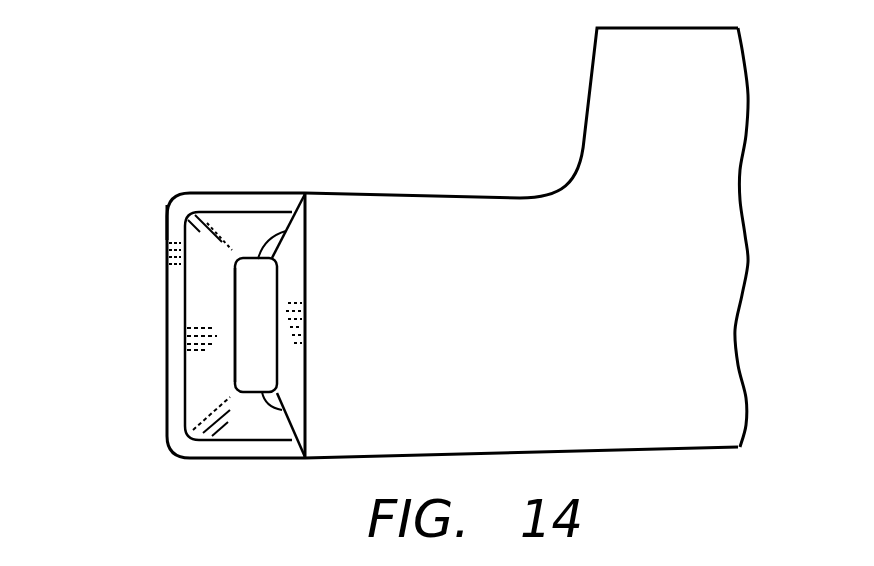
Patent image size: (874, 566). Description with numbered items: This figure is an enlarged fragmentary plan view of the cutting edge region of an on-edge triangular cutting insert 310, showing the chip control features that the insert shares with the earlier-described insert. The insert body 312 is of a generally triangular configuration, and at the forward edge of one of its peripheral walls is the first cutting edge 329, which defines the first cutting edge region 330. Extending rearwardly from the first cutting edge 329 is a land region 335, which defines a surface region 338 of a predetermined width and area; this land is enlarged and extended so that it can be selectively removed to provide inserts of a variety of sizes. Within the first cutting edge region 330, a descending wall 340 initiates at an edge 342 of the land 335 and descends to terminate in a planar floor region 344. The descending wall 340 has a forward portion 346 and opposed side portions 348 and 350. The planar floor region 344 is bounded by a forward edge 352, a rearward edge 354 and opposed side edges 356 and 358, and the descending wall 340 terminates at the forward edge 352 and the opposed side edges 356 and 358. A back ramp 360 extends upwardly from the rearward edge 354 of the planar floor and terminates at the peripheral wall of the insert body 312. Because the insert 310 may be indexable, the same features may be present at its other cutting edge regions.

The triangular cutting insert 310 is at (455, 185).
The insert body 312 is at (700, 306).
The first cutting edge region 330 is at (136, 112).
The surface region 338 is at (182, 191).
The land region 335 is at (172, 212).
The forward edge 352 is at (235, 273).
The forward portion 346 is at (200, 314).
The first cutting edge 329 is at (168, 347).
The edge 342 is at (185, 383).
The descending wall 340 is at (192, 418).
The side portion 348 is at (218, 220).
The planar floor region 344 is at (249, 258).
The side portion 350 is at (248, 428).
The rearward edge 354 is at (277, 285).
The side edge 356 is at (302, 233).
The side edge 358 is at (282, 410).
The back ramp 360 is at (295, 338).